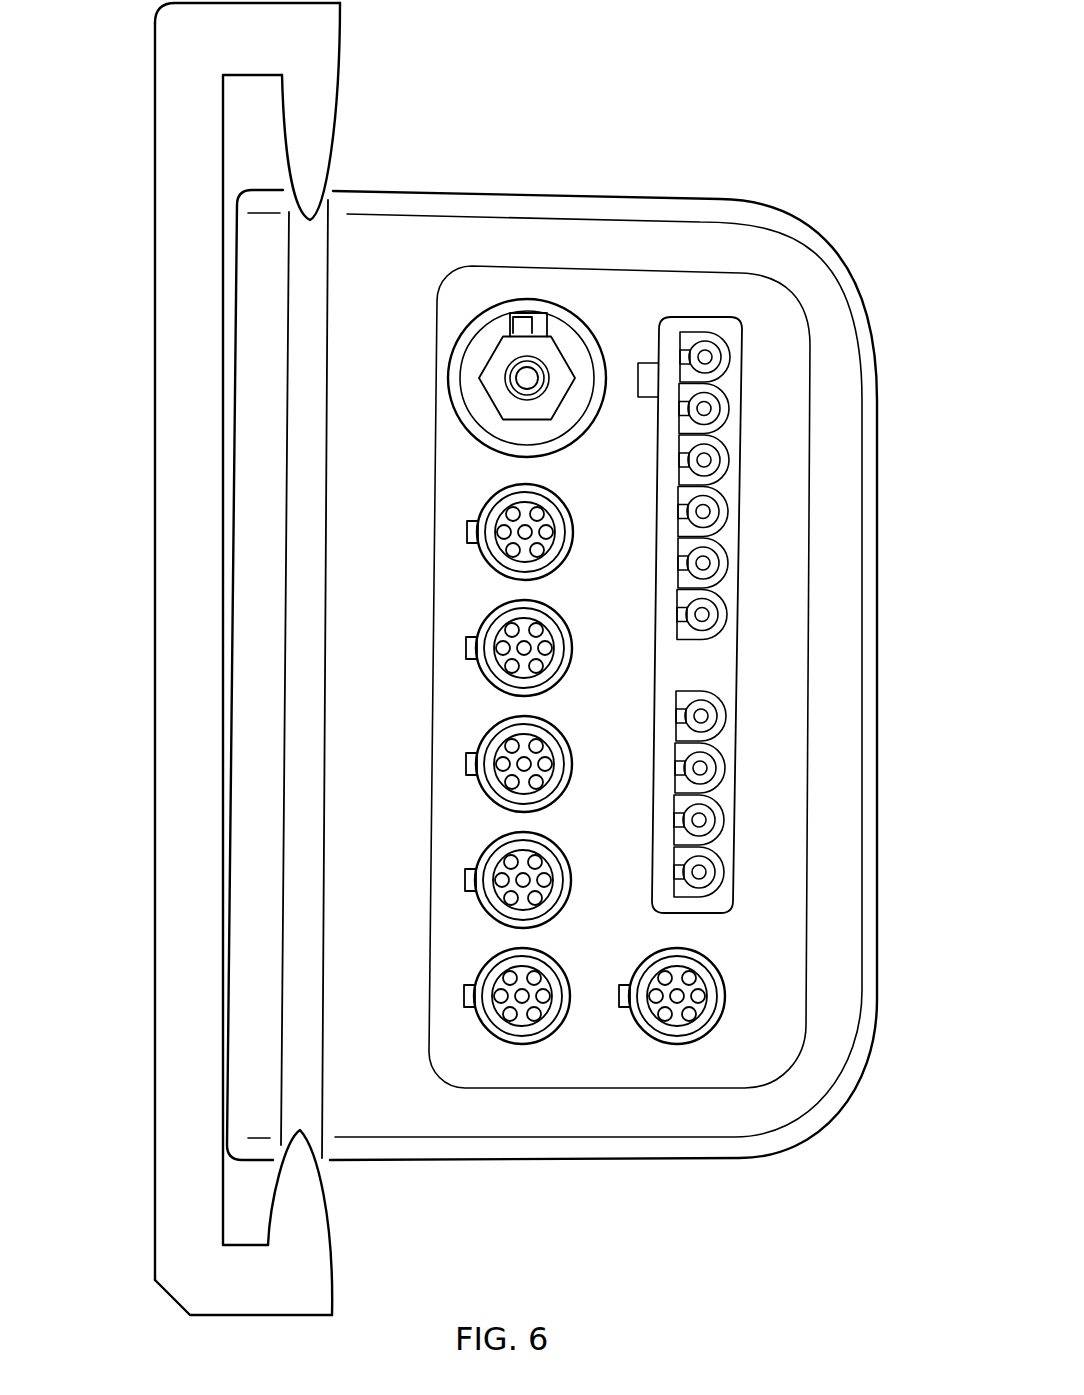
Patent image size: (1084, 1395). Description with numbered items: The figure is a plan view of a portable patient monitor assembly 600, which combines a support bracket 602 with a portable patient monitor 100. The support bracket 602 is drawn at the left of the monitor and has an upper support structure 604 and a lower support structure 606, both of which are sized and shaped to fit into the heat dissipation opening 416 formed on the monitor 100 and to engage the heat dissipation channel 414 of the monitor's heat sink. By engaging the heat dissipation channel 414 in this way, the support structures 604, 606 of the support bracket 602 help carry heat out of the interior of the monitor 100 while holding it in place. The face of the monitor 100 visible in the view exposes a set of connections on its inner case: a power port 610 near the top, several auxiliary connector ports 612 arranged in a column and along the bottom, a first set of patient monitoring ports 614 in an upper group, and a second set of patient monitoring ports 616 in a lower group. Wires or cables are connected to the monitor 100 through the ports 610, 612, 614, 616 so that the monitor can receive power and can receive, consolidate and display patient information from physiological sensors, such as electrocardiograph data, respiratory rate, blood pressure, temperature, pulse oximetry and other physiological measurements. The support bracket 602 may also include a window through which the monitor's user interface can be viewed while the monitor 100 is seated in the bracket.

The portable patient monitor assembly 600 is at (111, 90).
The support bracket 602 is at (150, 613).
The upper support structure 604 is at (320, 130).
The lower support structure 606 is at (298, 1228).
The portable patient monitor 100 is at (867, 230).
The heat dissipation channel 414 is at (302, 228).
The heat dissipation opening 416 is at (305, 494).
The power port 610 is at (550, 352).
The auxiliary connector ports 612 is at (468, 870).
The first set of patient monitoring ports 614 is at (725, 518).
The second set of patient monitoring ports 616 is at (725, 800).